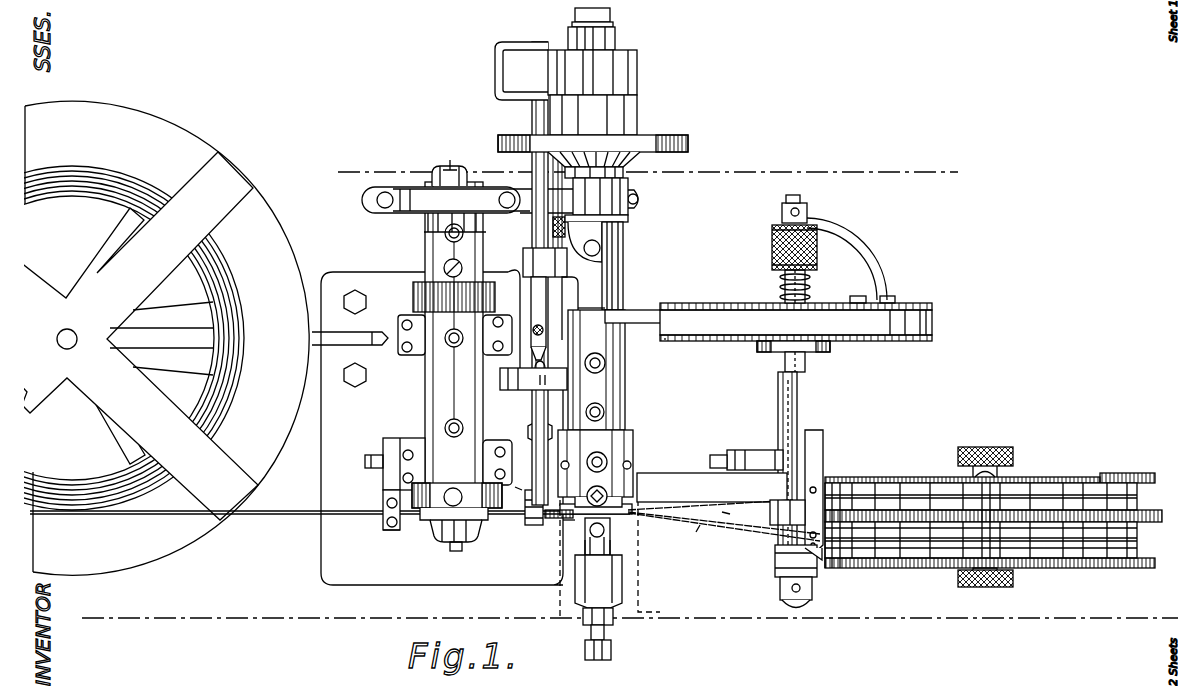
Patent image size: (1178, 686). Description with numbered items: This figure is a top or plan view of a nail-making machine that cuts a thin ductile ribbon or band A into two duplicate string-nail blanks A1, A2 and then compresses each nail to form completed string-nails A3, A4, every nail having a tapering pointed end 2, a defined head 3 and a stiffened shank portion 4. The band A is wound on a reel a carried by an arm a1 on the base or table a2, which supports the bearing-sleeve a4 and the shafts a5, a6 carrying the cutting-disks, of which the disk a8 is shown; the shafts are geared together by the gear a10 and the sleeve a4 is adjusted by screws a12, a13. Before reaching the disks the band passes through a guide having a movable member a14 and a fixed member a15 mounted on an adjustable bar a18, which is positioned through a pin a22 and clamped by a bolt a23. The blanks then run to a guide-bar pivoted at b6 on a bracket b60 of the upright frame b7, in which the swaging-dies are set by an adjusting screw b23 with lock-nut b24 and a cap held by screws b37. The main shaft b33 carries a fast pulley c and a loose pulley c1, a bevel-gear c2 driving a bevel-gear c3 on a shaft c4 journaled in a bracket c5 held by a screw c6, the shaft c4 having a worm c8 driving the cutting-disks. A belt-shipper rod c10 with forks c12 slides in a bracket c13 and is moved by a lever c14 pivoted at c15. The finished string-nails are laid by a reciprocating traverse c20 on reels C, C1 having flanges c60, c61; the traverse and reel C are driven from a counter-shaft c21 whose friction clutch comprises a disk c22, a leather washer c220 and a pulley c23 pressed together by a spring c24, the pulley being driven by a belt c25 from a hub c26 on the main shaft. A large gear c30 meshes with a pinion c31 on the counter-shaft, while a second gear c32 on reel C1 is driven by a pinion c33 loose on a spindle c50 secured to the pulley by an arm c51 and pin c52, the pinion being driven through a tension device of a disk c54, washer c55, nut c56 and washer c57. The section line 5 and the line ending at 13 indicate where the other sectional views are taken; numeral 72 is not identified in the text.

The reel a is at (132, 560).
The arm a1 is at (162, 320).
The base or table a2 is at (322, 452).
The bearing-sleeve a4 is at (425, 408).
The shaft a5 is at (450, 168).
The shaft a6 is at (446, 262).
The cutting-disk a8 is at (430, 535).
The gear a10 is at (415, 292).
The screw a12 is at (410, 450).
The screw a13 is at (400, 324).
The movable member a14 is at (390, 532).
The fixed member a15 is at (383, 520).
The bar a18 is at (383, 448).
The pin a22 is at (385, 500).
The clamping bolt or screw a23 is at (365, 468).
The ribbon or band A is at (160, 514).
The string-nail blank A1 is at (464, 495).
The string-nail blank A2 is at (520, 515).
The completed string-nail A3 is at (704, 516).
The completed string-nail A4 is at (746, 532).
The pivot b6 is at (530, 526).
The upright frame or casting b7 is at (625, 372).
The adjusting screw or rod b23 is at (614, 648).
The lock-nut b24 is at (592, 618).
The main shaft b33 is at (608, 42).
The screws b37 is at (632, 466).
The arm or bracket b60 is at (523, 479).
The fast pulley c is at (637, 112).
The loose pulley c1 is at (637, 70).
The bevel-gear c2 is at (636, 152).
The bevel-gear c3 is at (560, 232).
The shaft c4 is at (362, 200).
The frame or bracket c5 is at (422, 200).
The screw c6 is at (640, 202).
The worm c8 is at (462, 170).
The rod c10 is at (532, 118).
The forks or arms c12 is at (497, 92).
The bracket or arm c13 is at (596, 324).
The lever c14 is at (532, 352).
The pivot c15 is at (512, 382).
The reciprocating traverse c20 is at (812, 472).
The counter-shaft c21 is at (806, 292).
The disk c22 is at (760, 350).
The pulley c23 is at (714, 338).
The spring c24 is at (780, 300).
The belt c25 is at (657, 326).
The pulley or hub c26 is at (623, 292).
The gear c30 is at (1040, 505).
The pinion c31 is at (772, 518).
The gear c32 is at (892, 568).
The pinion c33 is at (778, 560).
The shaft or spindle c50 is at (786, 214).
The arm c51 is at (855, 252).
The pin c52 is at (808, 210).
The disk c54 is at (822, 560).
The washer c55 is at (818, 575).
The nut c56 is at (782, 594).
The washer c57 is at (790, 604).
The flange c60 is at (900, 478).
The flange c61 is at (1040, 557).
The leather washer c220 is at (830, 350).
The reel C is at (1100, 488).
The reel C1 is at (1098, 545).
The hole 72 is at (600, 402).
The section line 13 is at (580, 615).
The pointed end 2 is at (629, 604).
The head 3 is at (727, 519).
The shank portion 4 is at (694, 538).
The section line 5 is at (643, 174).